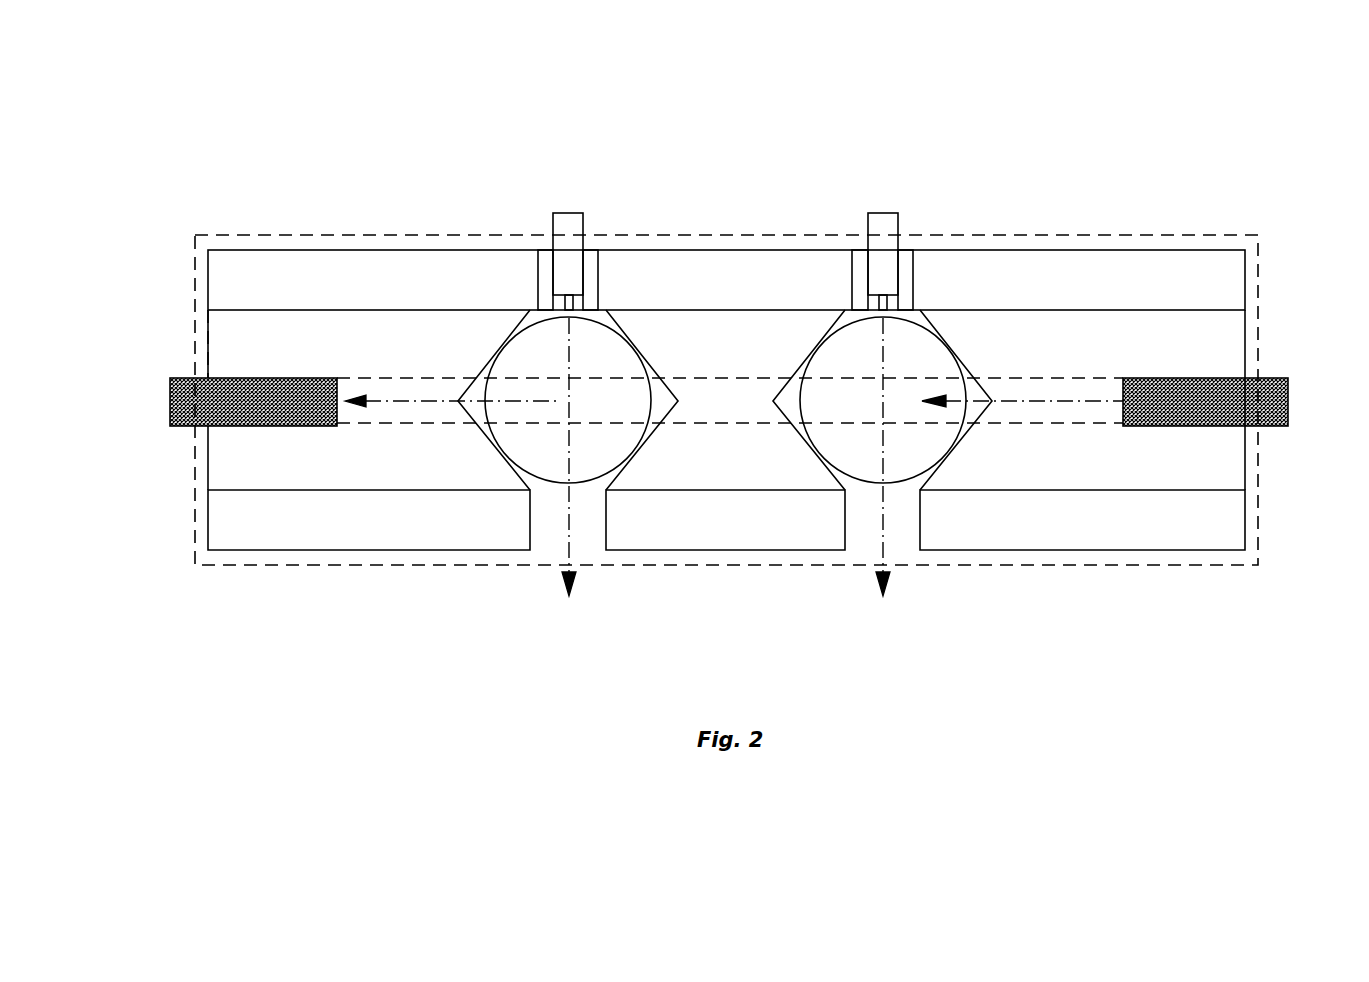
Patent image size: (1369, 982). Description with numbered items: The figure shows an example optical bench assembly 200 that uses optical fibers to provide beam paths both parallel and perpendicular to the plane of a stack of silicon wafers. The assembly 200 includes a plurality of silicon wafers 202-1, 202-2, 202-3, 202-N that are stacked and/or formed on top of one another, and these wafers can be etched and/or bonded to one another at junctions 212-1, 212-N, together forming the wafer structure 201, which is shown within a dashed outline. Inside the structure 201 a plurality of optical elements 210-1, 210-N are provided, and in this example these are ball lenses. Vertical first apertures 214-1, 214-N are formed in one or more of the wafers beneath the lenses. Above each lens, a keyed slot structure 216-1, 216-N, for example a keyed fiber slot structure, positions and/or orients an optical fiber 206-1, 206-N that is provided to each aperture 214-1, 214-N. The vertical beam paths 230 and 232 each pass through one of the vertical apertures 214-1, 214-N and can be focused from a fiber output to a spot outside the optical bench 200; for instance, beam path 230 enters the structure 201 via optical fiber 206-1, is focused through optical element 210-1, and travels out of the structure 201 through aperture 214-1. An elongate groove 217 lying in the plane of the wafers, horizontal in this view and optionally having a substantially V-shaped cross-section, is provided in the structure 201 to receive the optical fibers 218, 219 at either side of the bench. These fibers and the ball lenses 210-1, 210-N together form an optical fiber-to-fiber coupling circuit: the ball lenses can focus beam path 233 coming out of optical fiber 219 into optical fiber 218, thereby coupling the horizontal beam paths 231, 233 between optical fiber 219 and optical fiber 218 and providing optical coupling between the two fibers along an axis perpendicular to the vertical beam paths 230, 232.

The optical bench assembly 200 is at (1092, 202).
The wafer structure 201 is at (360, 237).
The silicon wafer 202-N is at (208, 282).
The silicon wafer 202-3 is at (208, 340).
The silicon wafer 202-2 is at (208, 458).
The silicon wafer 202-1 is at (208, 533).
The junction 212-N is at (1245, 310).
The junction 212-1 is at (1245, 490).
The optical fiber 206-1 is at (570, 213).
The optical fiber 206-N is at (884, 213).
The keyed slot structure 216-1 is at (545, 250).
The keyed slot structure 216-N is at (860, 250).
The optical element 210-1 is at (540, 452).
The optical element 210-N is at (898, 452).
The first aperture 214-1 is at (584, 537).
The first aperture 214-N is at (903, 540).
The optical fiber 218 is at (170, 404).
The optical fiber 219 is at (1288, 400).
The elongate groove 217 is at (372, 392).
The beam path 231 is at (400, 408).
The beam path 233 is at (1060, 403).
The beam path 230 is at (566, 592).
The beam path 232 is at (880, 580).